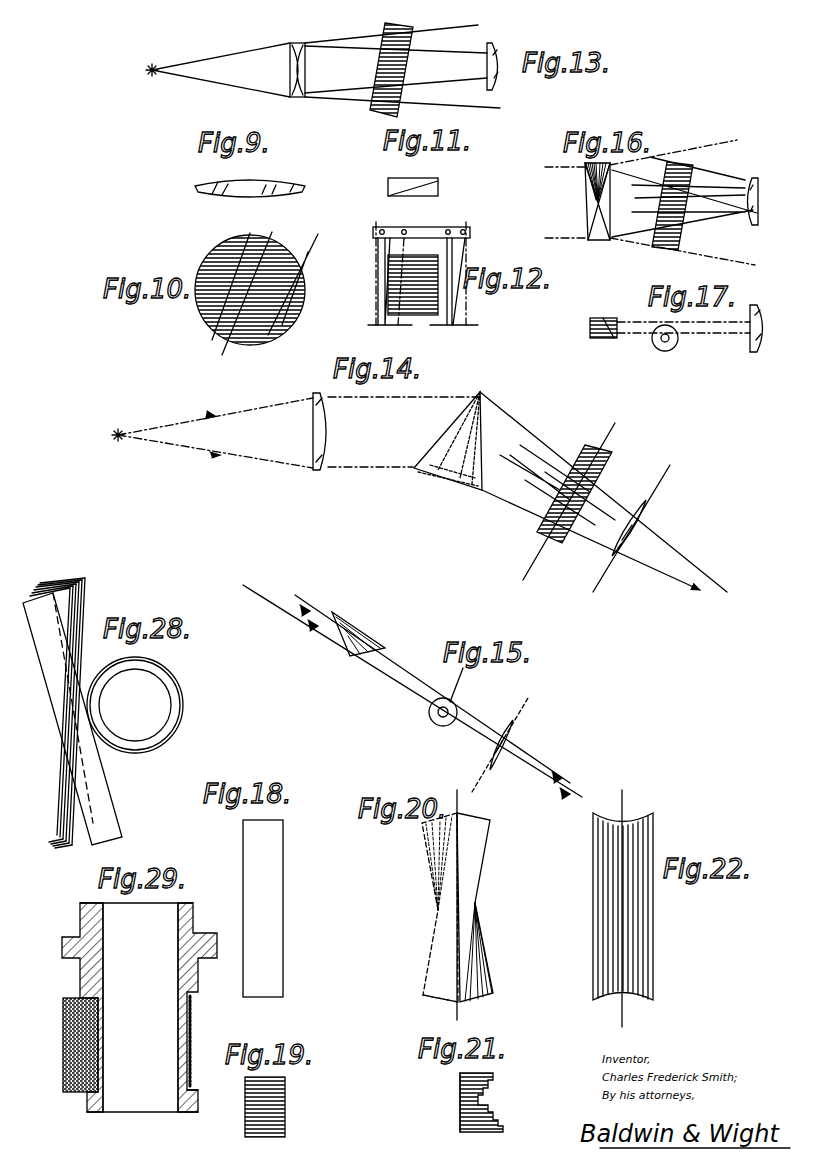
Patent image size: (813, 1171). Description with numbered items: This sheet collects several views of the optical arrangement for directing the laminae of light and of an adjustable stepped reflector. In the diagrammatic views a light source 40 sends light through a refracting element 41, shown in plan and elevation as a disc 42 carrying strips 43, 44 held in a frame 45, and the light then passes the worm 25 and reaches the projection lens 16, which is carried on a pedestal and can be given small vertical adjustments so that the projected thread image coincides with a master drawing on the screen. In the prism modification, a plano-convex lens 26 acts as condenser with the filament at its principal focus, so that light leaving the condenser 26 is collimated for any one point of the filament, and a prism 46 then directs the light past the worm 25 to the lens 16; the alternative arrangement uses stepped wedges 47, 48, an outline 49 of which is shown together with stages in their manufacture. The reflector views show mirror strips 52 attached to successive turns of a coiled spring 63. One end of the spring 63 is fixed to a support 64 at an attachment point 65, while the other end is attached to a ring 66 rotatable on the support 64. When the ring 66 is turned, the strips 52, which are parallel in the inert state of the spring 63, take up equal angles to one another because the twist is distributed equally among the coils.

In FIG. 13, the projection lens 16 is at (496, 88).
In FIG. 16, the projection lens 16 is at (751, 226).
In FIG. 17, the projection lens 16 is at (753, 350).
In FIG. 14, the projection lens 16 is at (640, 526).
In FIG. 15, the projection lens 16 is at (514, 742).
In FIG. 13, the worm 25 is at (415, 40).
In FIG. 16, the worm 25 is at (672, 250).
In FIG. 17, the worm 25 is at (664, 352).
In FIG. 14, the worm 25 is at (600, 456).
In FIG. 15, the worm 25 is at (445, 728).
In FIG. 14, the plano-convex lens 26 is at (330, 422).
In FIG. 13, the light source point 40 is at (146, 61).
In FIG. 14, the light source point 40 is at (114, 426).
In FIG. 13, the prism element 41 is at (304, 60).
In FIG. 11, the prism element 41 is at (425, 184).
In FIG. 12, the prism element 41 is at (428, 338).
In FIG. 10, the grating disc 42 is at (222, 244).
In FIG. 10, the strip 43 is at (316, 230).
In FIG. 10, the strip 44 is at (272, 230).
In FIG. 12, the frame 45 is at (440, 232).
In FIG. 14, the prism 46 is at (458, 480).
In FIG. 15, the prism 46 is at (354, 632).
In FIG. 16, the wedge 47 is at (612, 220).
In FIG. 17, the wedge 47 is at (616, 316).
In FIG. 20, the wedge 47 is at (455, 918).
In FIG. 21, the wedge 47 is at (462, 1100).
In FIG. 16, the wedge 48 is at (592, 186).
In FIG. 17, the wedge 48 is at (603, 340).
In FIG. 20, the wedge 48 is at (484, 956).
In FIG. 21, the wedge 48 is at (488, 1106).
In FIG. 20, the wedge outline 49 is at (428, 981).
In FIG. 28, the mirror strips 52 is at (102, 802).
In FIG. 29, the mirror strips 52 is at (63, 1034).
In FIG. 28, the coiled spring 63 is at (183, 710).
In FIG. 29, the coiled spring 63 is at (190, 1032).
In FIG. 29, the fixed support 64 is at (185, 996).
In FIG. 29, the attachment point 65 is at (192, 1086).
In FIG. 29, the ring 66 is at (66, 935).